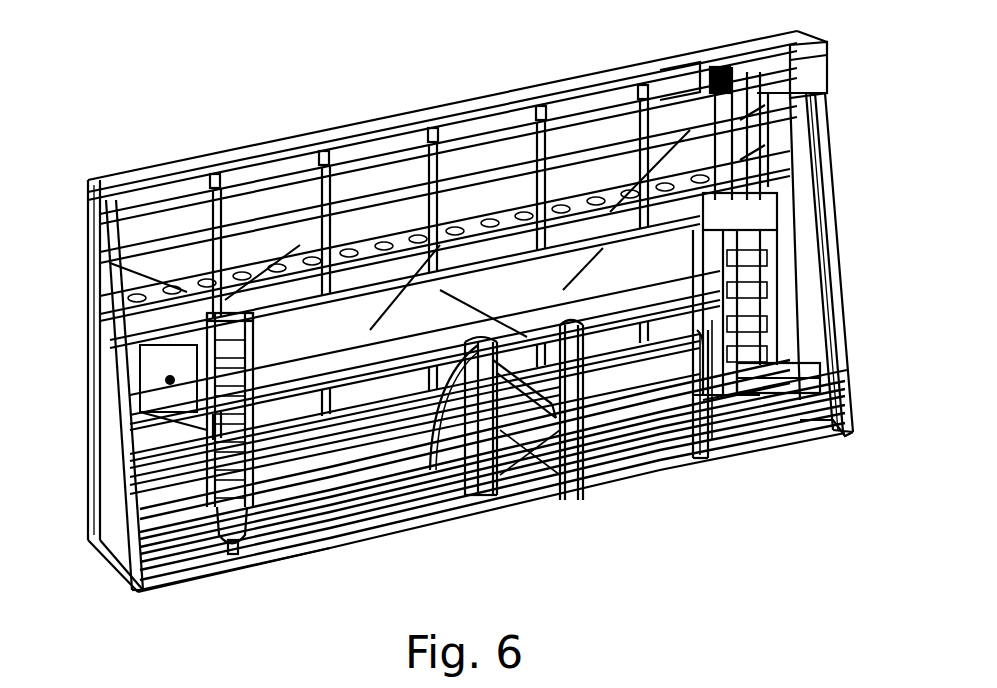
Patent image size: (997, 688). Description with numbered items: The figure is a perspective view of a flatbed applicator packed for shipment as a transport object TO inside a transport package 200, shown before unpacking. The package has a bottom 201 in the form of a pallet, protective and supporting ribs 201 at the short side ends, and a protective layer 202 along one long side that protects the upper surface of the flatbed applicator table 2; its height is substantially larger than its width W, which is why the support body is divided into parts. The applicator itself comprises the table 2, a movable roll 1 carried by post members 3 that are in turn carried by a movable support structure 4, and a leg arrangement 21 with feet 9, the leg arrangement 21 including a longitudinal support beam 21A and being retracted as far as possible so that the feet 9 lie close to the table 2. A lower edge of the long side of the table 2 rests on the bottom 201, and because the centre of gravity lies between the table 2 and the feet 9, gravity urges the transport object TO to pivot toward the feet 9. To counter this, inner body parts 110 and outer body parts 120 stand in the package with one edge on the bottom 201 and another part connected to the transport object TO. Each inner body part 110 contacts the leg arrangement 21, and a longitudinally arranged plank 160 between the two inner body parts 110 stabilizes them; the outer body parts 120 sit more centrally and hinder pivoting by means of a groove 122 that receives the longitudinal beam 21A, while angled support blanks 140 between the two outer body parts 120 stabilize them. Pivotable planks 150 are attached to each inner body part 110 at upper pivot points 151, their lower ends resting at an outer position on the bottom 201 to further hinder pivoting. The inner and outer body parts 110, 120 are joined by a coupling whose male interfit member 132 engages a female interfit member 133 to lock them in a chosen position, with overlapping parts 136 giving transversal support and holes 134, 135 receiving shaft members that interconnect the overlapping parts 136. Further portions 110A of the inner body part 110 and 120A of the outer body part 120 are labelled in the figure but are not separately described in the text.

The transport package 200 is at (90, 573).
The bottom 201 is at (88, 243).
The protective layer 202 is at (172, 172).
The movable roll 1 is at (793, 160).
The flatbed applicator table 2 is at (498, 199).
The post members 3 is at (778, 82).
The movable support structure 4 is at (680, 84).
The feet 9 is at (733, 238).
The leg arrangement 21 is at (753, 140).
The longitudinal support beam 21A is at (372, 378).
The transport object TO is at (365, 243).
The longitudinally arranged plank 160 is at (563, 232).
The inner body part 110 is at (712, 410).
The post channel 110A is at (700, 383).
The outer body part 120 is at (455, 440).
The curved bracket 120A is at (445, 405).
The groove 122 is at (542, 440).
The male interfit member 132 is at (773, 440).
The interfit member 133 is at (737, 307).
The holes 134 is at (578, 468).
The holes 135 is at (737, 327).
The overlapping parts 136 is at (707, 373).
The angled support blanks 140 is at (515, 420).
The pivotable planks 150 is at (703, 330).
The upper pivot points 151 is at (787, 377).
The width W is at (167, 640).